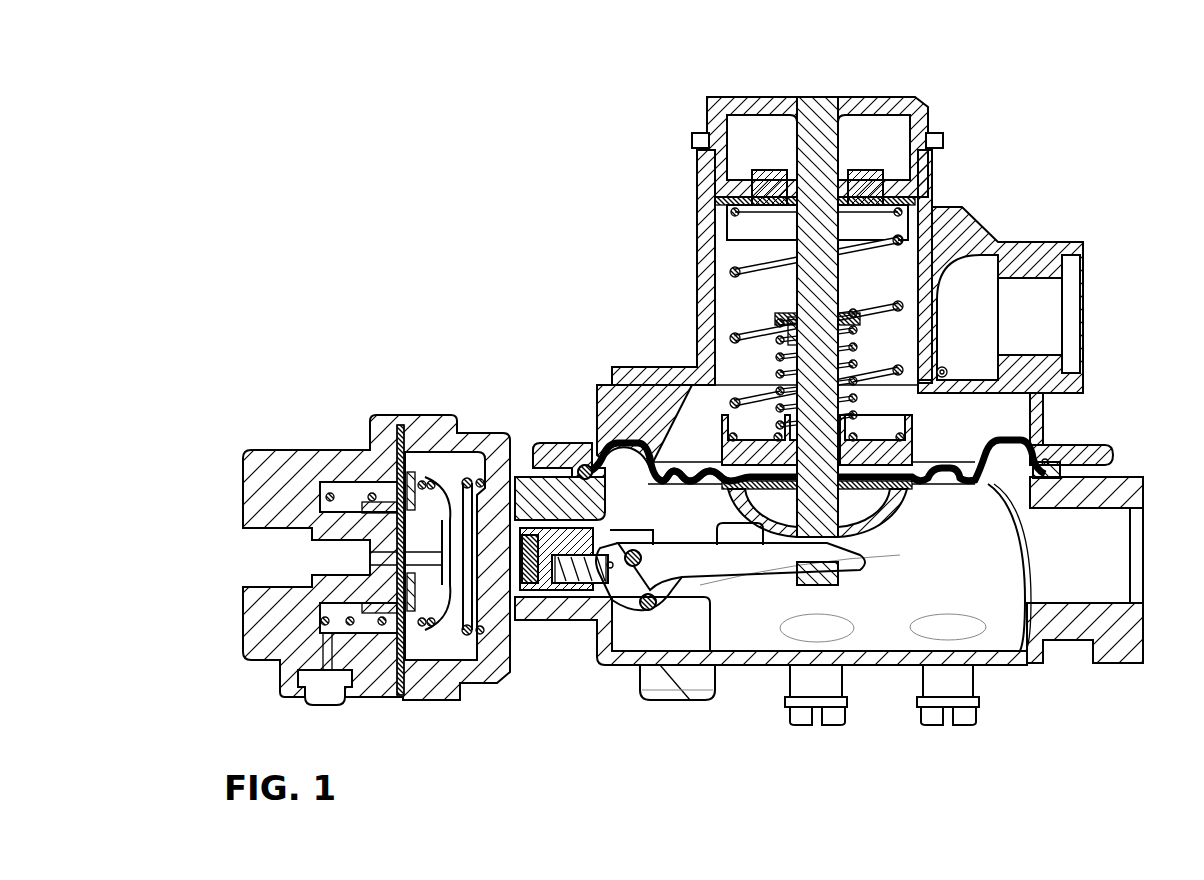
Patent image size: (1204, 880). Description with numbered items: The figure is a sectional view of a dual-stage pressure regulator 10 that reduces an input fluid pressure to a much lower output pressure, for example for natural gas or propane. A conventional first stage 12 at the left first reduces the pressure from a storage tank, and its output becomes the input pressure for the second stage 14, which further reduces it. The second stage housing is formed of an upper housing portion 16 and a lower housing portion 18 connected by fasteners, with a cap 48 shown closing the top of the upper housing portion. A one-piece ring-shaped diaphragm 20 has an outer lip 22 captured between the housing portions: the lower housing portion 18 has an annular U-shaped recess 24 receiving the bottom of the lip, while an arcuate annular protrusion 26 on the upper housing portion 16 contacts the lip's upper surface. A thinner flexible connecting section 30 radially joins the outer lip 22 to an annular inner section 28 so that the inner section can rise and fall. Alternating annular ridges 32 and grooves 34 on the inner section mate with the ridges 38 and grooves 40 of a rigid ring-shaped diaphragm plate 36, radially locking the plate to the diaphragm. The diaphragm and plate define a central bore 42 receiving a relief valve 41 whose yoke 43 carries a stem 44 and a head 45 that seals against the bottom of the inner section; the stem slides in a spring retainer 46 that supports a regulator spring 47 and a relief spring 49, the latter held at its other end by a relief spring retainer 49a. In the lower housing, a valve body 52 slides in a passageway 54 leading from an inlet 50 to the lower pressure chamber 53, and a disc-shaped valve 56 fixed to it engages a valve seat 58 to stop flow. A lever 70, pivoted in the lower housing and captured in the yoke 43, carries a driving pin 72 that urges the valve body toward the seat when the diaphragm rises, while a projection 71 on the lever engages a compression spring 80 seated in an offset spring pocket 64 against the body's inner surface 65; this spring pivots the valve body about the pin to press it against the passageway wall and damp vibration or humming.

The pressure regulator 10 is at (1130, 150).
The first stage 12 is at (243, 392).
The second stage 14 is at (1150, 740).
The upper housing portion 16 is at (705, 305).
The lower housing portion 18 is at (1035, 488).
The diaphragm 20 is at (640, 434).
The outer lip 22 is at (1050, 482).
The U-shaped recess 24 is at (1062, 470).
The annular protrusion 26 is at (1046, 460).
The annular inner section 28 is at (990, 490).
The flexible connecting section 30 is at (585, 464).
The annular ridges 32 is at (905, 490).
The grooves 34 is at (920, 472).
The diaphragm plate 36 is at (660, 472).
The ridges 38 is at (710, 470).
The grooves 40 is at (682, 470).
The relief valve 41 is at (975, 233).
The central bore 42 is at (808, 542).
The yoke 43 is at (805, 588).
The stem 44 is at (835, 300).
The head 45 is at (845, 540).
The spring retainer 46 is at (905, 452).
The regulator spring 47 is at (738, 268).
The cap 48 is at (722, 190).
The relief spring 49 is at (778, 345).
The relief spring retainer 49a is at (790, 316).
The inlet 50 is at (460, 632).
The valve body 52 is at (565, 590).
The lower pressure chamber 53 is at (830, 667).
The passageway 54 is at (545, 470).
The disc-shaped valve 56 is at (528, 592).
The valve seat 58 is at (478, 487).
The spring pocket 64 is at (661, 622).
The inner surface 65 is at (550, 592).
The lever 70 is at (727, 582).
The projection 71 is at (612, 560).
The driving pin 72 is at (637, 550).
The spring 80 is at (588, 585).